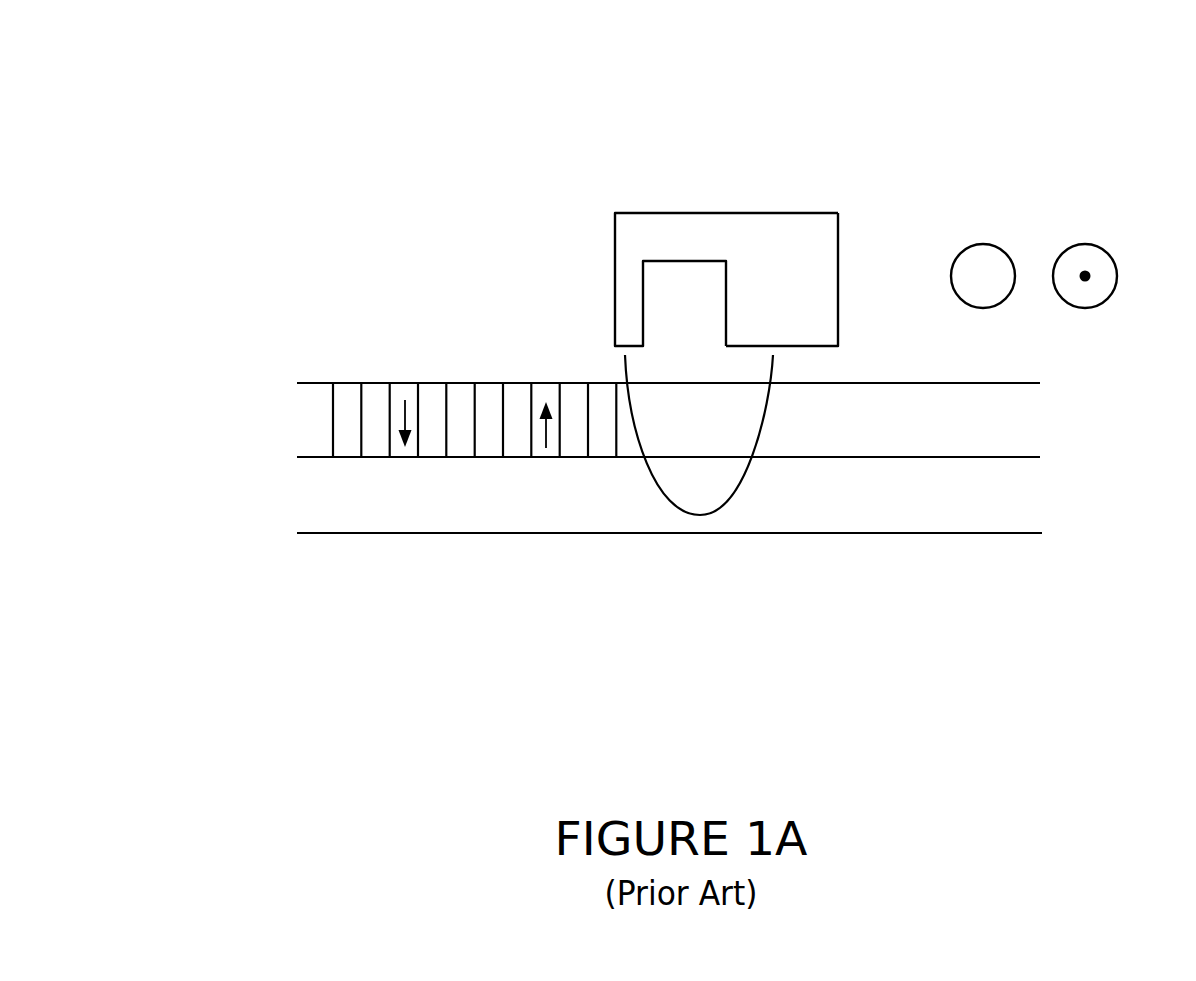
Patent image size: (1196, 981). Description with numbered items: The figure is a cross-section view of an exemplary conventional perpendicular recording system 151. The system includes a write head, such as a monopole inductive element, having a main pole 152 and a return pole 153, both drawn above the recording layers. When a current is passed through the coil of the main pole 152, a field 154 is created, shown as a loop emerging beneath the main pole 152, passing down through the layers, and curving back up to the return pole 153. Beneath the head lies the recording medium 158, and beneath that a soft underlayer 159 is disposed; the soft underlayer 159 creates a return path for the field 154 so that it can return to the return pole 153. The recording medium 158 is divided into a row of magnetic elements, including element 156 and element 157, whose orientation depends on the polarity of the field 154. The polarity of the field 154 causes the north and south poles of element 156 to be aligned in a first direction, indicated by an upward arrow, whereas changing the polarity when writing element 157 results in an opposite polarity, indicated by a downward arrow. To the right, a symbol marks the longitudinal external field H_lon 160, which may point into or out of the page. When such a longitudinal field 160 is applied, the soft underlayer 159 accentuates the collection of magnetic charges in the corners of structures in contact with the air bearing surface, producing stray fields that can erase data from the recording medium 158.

The perpendicular recording system 151 is at (189, 38).
The main pole 152 is at (625, 283).
The return pole 153 is at (827, 281).
The field 154 is at (650, 482).
The magnetic element 156 is at (540, 382).
The magnetic element 157 is at (400, 382).
The recording medium 158 is at (1010, 393).
The soft underlayer 159 is at (1010, 467).
The longitudinal external field H_lon 160 is at (1066, 280).